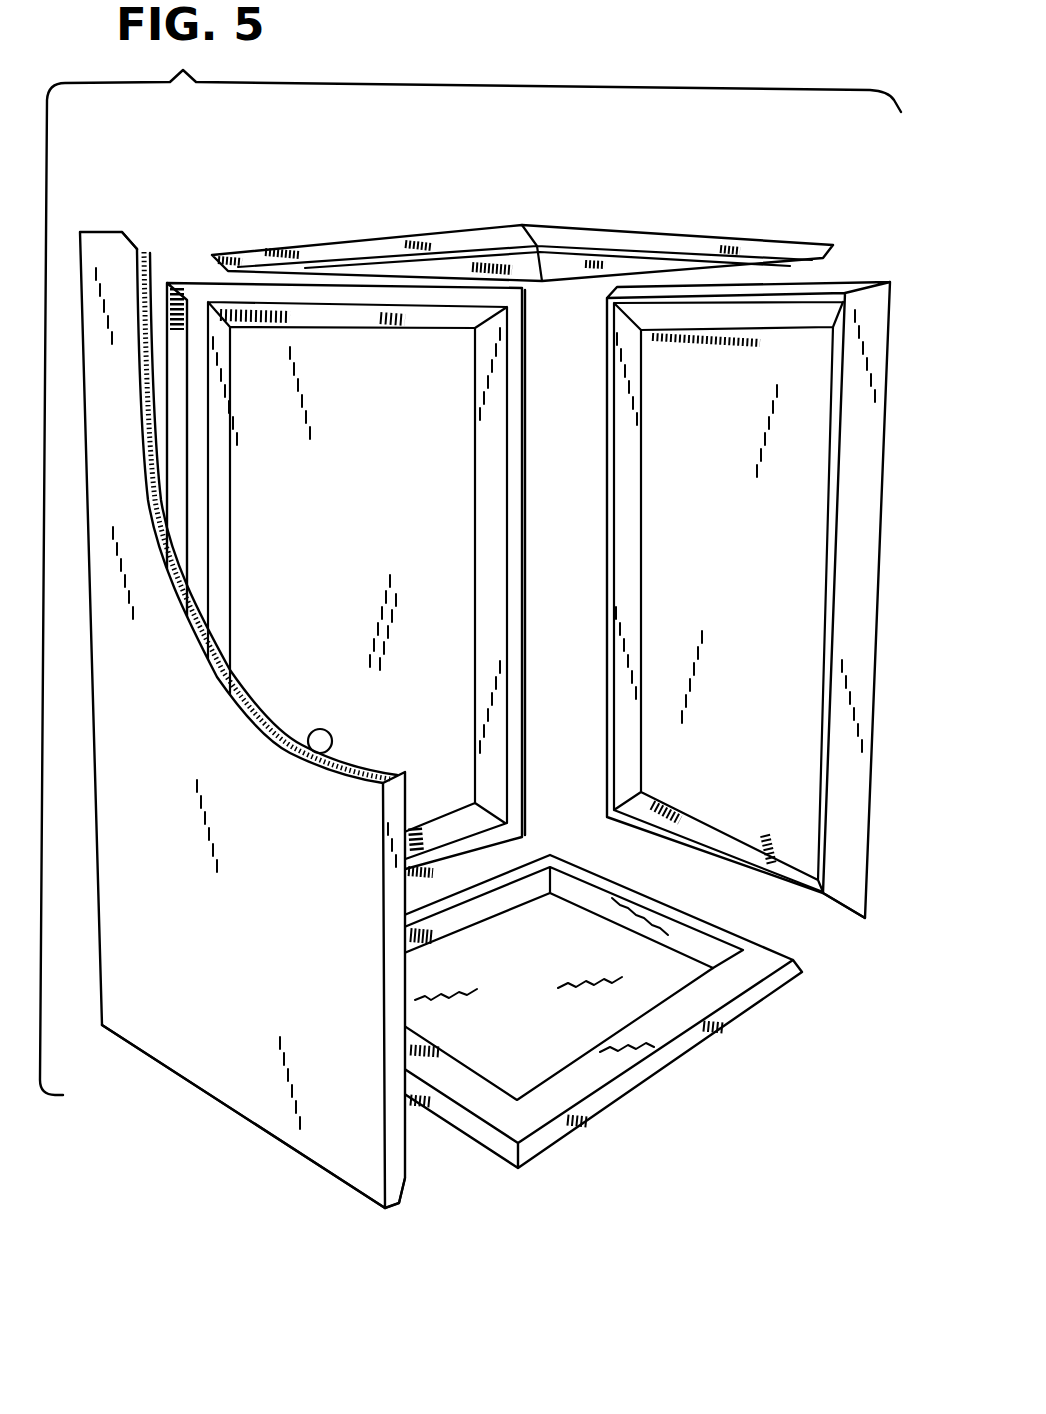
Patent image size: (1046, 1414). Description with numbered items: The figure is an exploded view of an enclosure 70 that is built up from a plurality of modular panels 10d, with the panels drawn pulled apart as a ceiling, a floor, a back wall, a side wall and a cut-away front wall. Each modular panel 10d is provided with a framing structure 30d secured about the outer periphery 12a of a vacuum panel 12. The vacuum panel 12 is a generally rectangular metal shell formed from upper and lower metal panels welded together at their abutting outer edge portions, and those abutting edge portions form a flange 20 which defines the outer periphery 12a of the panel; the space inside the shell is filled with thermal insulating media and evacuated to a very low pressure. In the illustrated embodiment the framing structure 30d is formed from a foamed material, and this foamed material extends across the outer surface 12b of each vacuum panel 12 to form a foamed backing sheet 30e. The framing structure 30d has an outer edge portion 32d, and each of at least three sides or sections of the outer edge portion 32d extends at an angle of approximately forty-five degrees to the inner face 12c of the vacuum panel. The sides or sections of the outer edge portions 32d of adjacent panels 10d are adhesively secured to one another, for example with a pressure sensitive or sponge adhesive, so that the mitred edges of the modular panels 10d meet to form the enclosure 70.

The enclosure 70 is at (882, 270).
The modular panel 10d is at (578, 237).
The framing structure 30d is at (697, 243).
The foamed backing sheet 30e is at (202, 1050).
The vacuum panel 12 is at (797, 655).
The outer periphery 12a is at (140, 250).
The outer surface 12b is at (320, 755).
The inner face 12c is at (667, 600).
The flange 20 is at (148, 268).
The outer edge portion 32d is at (136, 242).